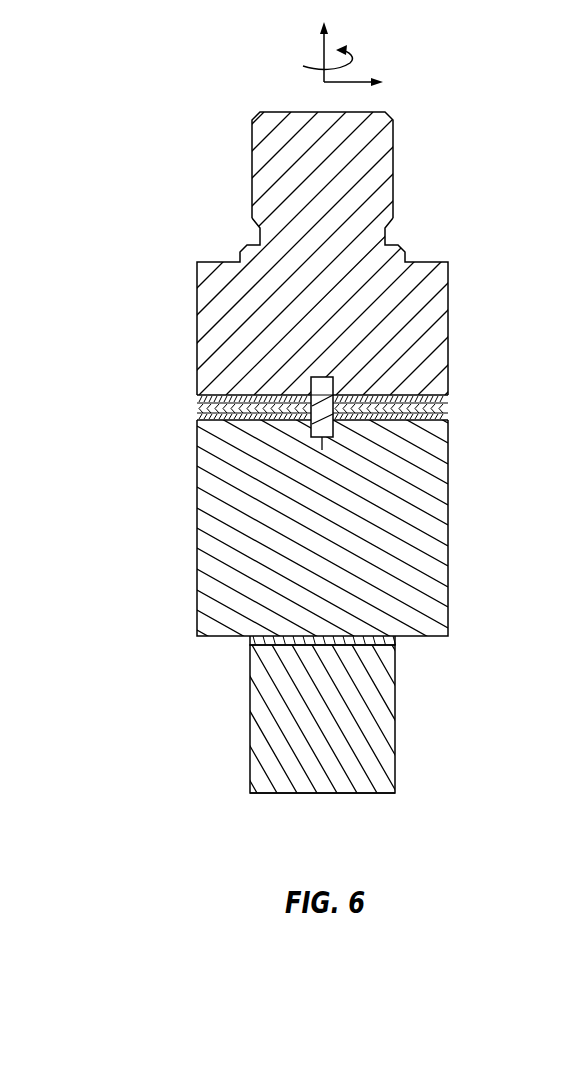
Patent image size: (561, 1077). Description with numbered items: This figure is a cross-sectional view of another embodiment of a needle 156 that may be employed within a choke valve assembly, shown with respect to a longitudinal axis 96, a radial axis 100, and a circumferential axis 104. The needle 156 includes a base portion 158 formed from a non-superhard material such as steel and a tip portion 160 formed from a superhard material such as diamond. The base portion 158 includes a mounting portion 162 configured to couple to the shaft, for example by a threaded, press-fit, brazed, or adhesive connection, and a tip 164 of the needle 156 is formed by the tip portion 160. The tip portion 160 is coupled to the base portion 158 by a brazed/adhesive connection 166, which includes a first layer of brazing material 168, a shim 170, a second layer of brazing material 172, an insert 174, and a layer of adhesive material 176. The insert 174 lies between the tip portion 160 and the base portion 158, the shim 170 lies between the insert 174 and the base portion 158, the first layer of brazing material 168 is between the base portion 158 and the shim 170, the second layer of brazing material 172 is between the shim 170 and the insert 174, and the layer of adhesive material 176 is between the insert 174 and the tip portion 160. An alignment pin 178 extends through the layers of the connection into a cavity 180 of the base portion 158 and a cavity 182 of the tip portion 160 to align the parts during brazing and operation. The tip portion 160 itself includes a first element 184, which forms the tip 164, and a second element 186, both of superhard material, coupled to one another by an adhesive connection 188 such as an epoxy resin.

The longitudinal axis 96 is at (324, 60).
The radial axis 100 is at (347, 82).
The circumferential axis 104 is at (350, 63).
The needle 156 is at (158, 554).
The base portion 158 is at (428, 270).
The tip portion 160 is at (494, 658).
The mounting portion 162 is at (252, 167).
The tip 164 is at (287, 793).
The brazed/adhesive connection 166 is at (301, 410).
The first layer of brazing material 168 is at (197, 398).
The shim 170 is at (448, 400).
The second layer of brazing material 172 is at (197, 402).
The insert 174 is at (197, 411).
The layer of adhesive material 176 is at (197, 420).
The alignment pin 178 is at (310, 395).
The cavity of the base portion 180 is at (321, 376).
The cavity of the tip portion 182 is at (322, 450).
The first element 184 is at (395, 718).
The second element 186 is at (448, 577).
The adhesive connection 188 is at (396, 643).